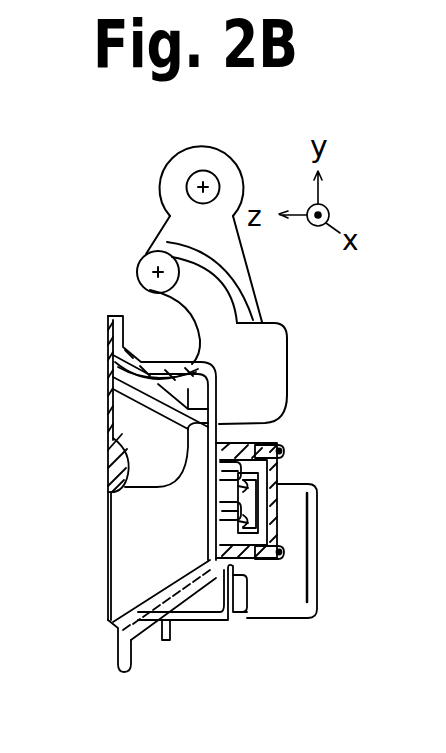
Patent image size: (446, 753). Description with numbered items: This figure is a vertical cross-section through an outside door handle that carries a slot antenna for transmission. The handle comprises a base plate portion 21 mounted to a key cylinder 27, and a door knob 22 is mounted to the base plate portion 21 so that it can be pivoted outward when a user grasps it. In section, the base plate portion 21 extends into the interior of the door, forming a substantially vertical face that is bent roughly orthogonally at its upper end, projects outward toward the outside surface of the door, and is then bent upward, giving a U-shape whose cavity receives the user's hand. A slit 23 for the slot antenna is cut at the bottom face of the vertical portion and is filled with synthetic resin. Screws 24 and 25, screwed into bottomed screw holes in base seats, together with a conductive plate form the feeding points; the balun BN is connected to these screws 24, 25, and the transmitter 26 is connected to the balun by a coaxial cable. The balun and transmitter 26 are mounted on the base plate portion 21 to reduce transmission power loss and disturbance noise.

The base plate portion 21 is at (148, 607).
The door knob 22 is at (118, 487).
The slit 23 is at (222, 503).
The screw 24 is at (258, 500).
The screw 25 is at (260, 518).
The transmitter 26 is at (277, 460).
The key cylinder 27 is at (277, 618).